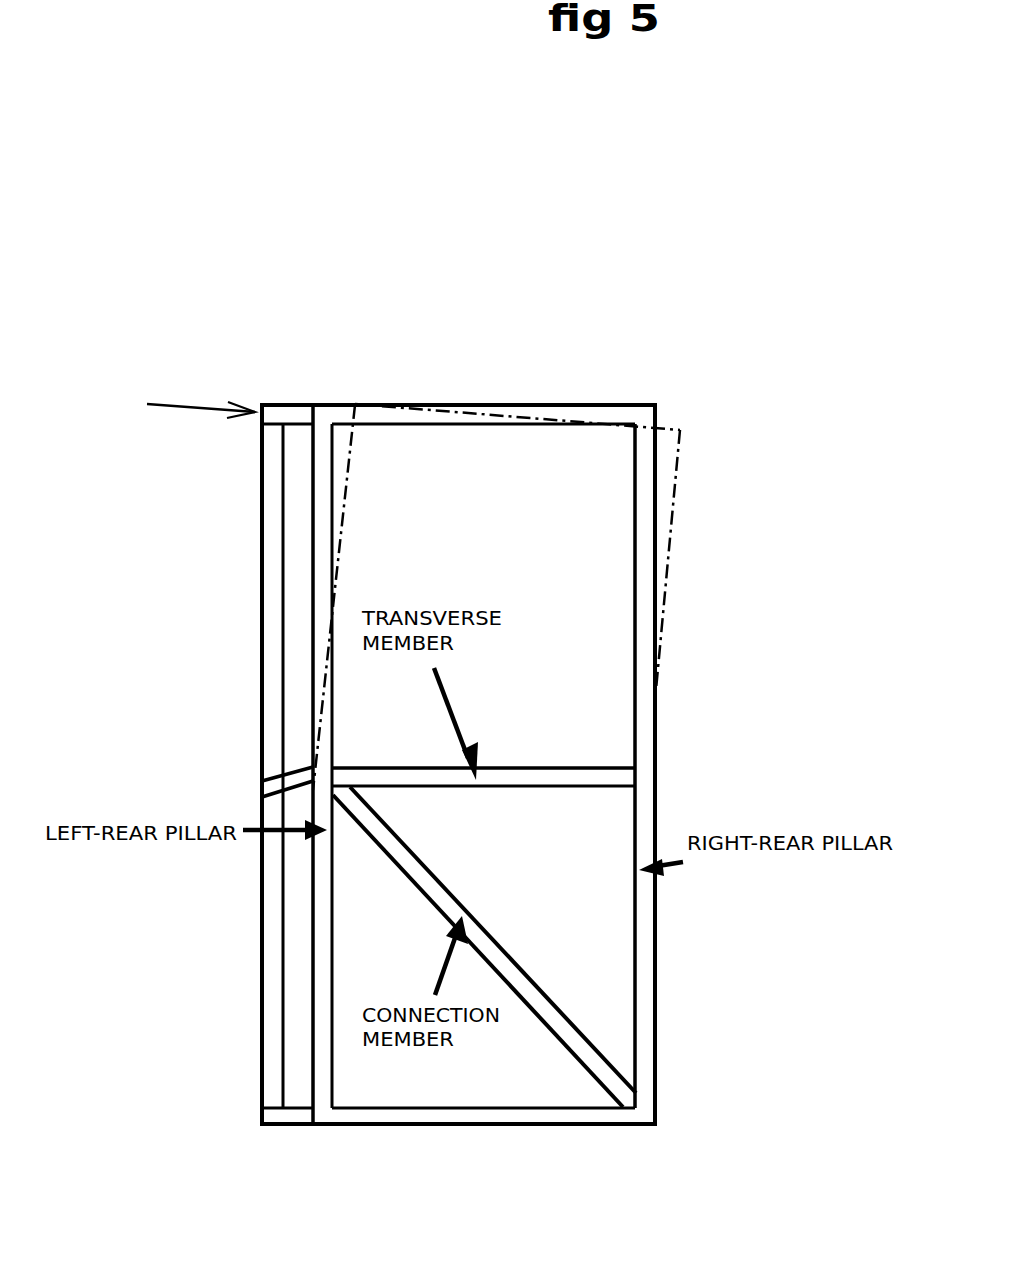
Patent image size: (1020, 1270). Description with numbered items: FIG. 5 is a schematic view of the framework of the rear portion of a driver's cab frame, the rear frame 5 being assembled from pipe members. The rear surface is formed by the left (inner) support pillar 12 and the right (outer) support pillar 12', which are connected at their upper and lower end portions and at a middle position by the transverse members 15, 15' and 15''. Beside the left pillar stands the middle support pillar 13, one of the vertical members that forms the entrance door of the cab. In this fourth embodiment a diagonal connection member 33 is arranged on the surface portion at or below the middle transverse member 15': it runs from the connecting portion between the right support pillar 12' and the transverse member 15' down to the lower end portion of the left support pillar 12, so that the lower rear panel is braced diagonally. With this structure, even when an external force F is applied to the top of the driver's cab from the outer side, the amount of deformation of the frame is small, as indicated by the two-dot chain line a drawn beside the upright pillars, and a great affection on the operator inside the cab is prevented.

The rear frame 5 is at (428, 378).
The transverse member 15 is at (484, 368).
The transverse member 15' is at (483, 732).
The transverse member 15'' is at (458, 1158).
The middle support pillar 13 is at (272, 557).
The right (outer) support pillar 12' is at (262, 601).
The left (inner) support pillar 12 is at (694, 764).
The diagonal connection member 33 is at (487, 946).
The two-dot chain line a is at (672, 532).
The external force F is at (185, 397).